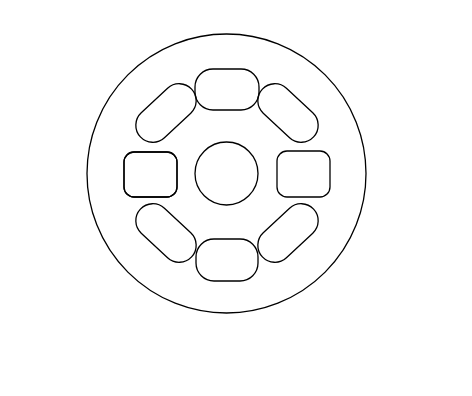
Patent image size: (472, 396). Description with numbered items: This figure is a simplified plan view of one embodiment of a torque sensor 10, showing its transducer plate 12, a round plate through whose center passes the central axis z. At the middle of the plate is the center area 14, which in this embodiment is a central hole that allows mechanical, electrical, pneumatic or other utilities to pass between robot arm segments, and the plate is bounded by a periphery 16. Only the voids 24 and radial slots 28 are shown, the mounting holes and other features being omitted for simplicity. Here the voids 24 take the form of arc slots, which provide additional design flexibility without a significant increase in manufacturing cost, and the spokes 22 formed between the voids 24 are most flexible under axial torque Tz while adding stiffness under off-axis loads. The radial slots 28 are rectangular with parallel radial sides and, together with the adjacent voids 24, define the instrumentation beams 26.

The torque sensor 10 is at (372, 57).
The transducer plate 12 is at (333, 215).
The center area 14 is at (207, 188).
The periphery 16 is at (340, 133).
The spokes 22 is at (262, 93).
The voids 24 is at (226, 265).
The instrumentation beams 26 is at (148, 148).
The radial slots 28 is at (143, 175).